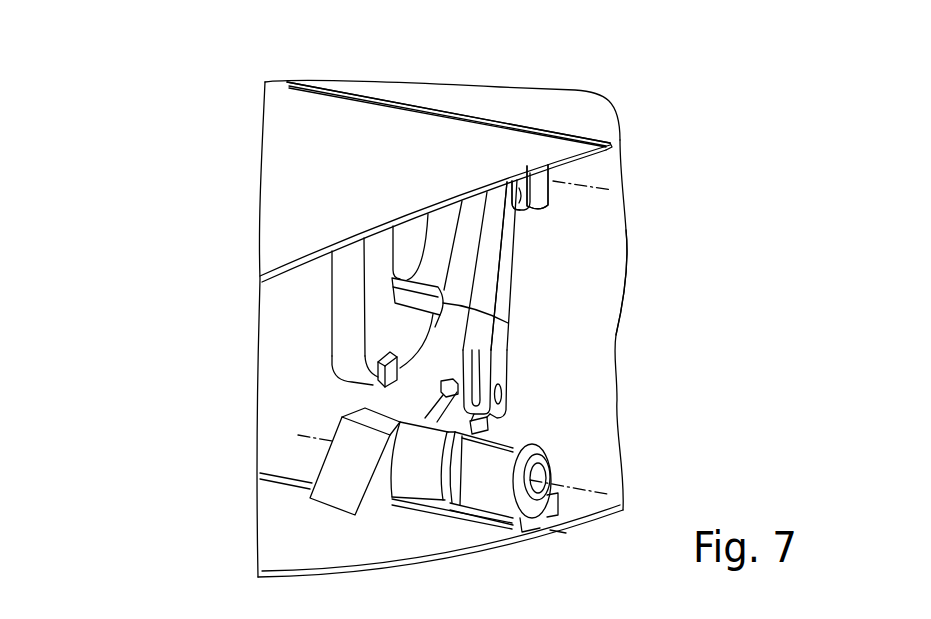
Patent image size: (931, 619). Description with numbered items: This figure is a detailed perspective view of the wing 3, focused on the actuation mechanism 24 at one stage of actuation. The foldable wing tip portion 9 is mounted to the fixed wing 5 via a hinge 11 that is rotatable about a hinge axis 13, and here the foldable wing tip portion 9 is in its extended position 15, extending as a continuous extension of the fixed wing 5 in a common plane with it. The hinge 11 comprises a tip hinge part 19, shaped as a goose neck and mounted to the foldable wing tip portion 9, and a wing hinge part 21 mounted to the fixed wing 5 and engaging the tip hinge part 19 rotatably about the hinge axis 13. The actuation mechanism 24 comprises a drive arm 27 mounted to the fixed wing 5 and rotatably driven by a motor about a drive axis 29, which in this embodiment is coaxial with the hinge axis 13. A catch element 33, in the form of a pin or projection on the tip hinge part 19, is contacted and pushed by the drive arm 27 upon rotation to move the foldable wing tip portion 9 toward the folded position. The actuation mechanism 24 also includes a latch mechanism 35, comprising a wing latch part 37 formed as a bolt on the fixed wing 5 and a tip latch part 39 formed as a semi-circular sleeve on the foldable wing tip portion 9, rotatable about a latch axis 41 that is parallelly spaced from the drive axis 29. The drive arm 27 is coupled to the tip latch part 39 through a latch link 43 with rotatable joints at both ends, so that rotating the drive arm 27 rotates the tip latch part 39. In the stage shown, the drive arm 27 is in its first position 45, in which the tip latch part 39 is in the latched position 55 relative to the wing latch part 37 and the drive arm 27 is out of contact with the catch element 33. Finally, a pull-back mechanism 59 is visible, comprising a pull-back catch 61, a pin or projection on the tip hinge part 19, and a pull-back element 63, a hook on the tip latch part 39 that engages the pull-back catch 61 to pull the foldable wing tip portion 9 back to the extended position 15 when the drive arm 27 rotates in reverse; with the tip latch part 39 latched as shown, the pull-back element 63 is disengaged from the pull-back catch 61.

The wing 3 is at (166, 183).
The fixed wing 5 is at (577, 330).
The foldable wing tip portion 9 is at (371, 162).
The hinge 11 is at (518, 108).
The hinge axis 13 is at (595, 185).
The extended position 15 is at (184, 114).
The tip hinge part 19 is at (324, 311).
The wing hinge part 21 is at (448, 112).
The actuation mechanism 24 is at (556, 225).
The drive arm 27 is at (508, 266).
The drive axis 29 is at (537, 187).
The catch element 33 is at (505, 319).
The latch mechanism 35 is at (607, 483).
The wing latch part 37 is at (473, 481).
The tip latch part 39 is at (407, 471).
The latch axis 41 is at (304, 432).
The latch link 43 is at (488, 420).
The first position 45 is at (696, 287).
The latched position 55 is at (607, 408).
The pull-back mechanism 59 is at (318, 362).
The pull-back catch 61 is at (376, 383).
The pull-back element 63 is at (453, 381).